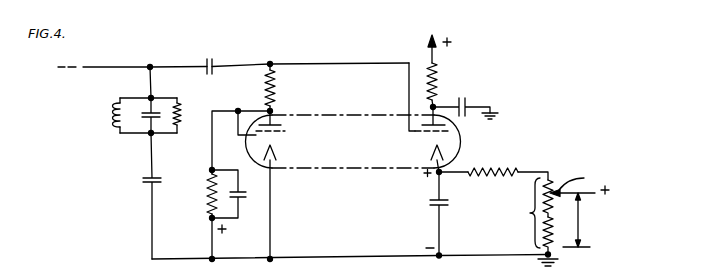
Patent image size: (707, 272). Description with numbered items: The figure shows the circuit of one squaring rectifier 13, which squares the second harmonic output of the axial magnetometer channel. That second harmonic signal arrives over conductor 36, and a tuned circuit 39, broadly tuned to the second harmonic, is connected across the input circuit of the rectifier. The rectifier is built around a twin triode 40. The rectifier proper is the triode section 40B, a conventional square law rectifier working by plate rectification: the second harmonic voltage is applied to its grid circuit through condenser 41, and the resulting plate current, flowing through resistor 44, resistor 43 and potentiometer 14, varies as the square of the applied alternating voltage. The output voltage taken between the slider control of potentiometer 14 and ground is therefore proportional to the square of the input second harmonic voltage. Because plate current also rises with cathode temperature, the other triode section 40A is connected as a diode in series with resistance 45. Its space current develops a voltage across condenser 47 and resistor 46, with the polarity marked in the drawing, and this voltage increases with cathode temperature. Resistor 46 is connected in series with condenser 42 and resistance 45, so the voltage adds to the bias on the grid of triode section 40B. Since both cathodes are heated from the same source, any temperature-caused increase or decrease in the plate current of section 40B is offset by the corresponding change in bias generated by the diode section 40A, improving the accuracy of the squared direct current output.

The conductor 36 is at (95, 67).
The condenser 41 is at (209, 62).
The tuned circuit 39 is at (138, 134).
The resistance 45 is at (282, 90).
The twin triode 40 is at (379, 112).
The triode section 40A is at (288, 136).
The triode section 40B is at (414, 138).
The resistor 44 is at (438, 81).
The resistor 46 is at (205, 197).
The condenser 47 is at (250, 199).
The condenser 42 is at (452, 204).
The resistor 43 is at (485, 168).
The potentiometer 14 is at (531, 222).
The squaring rectifier 13 is at (578, 186).